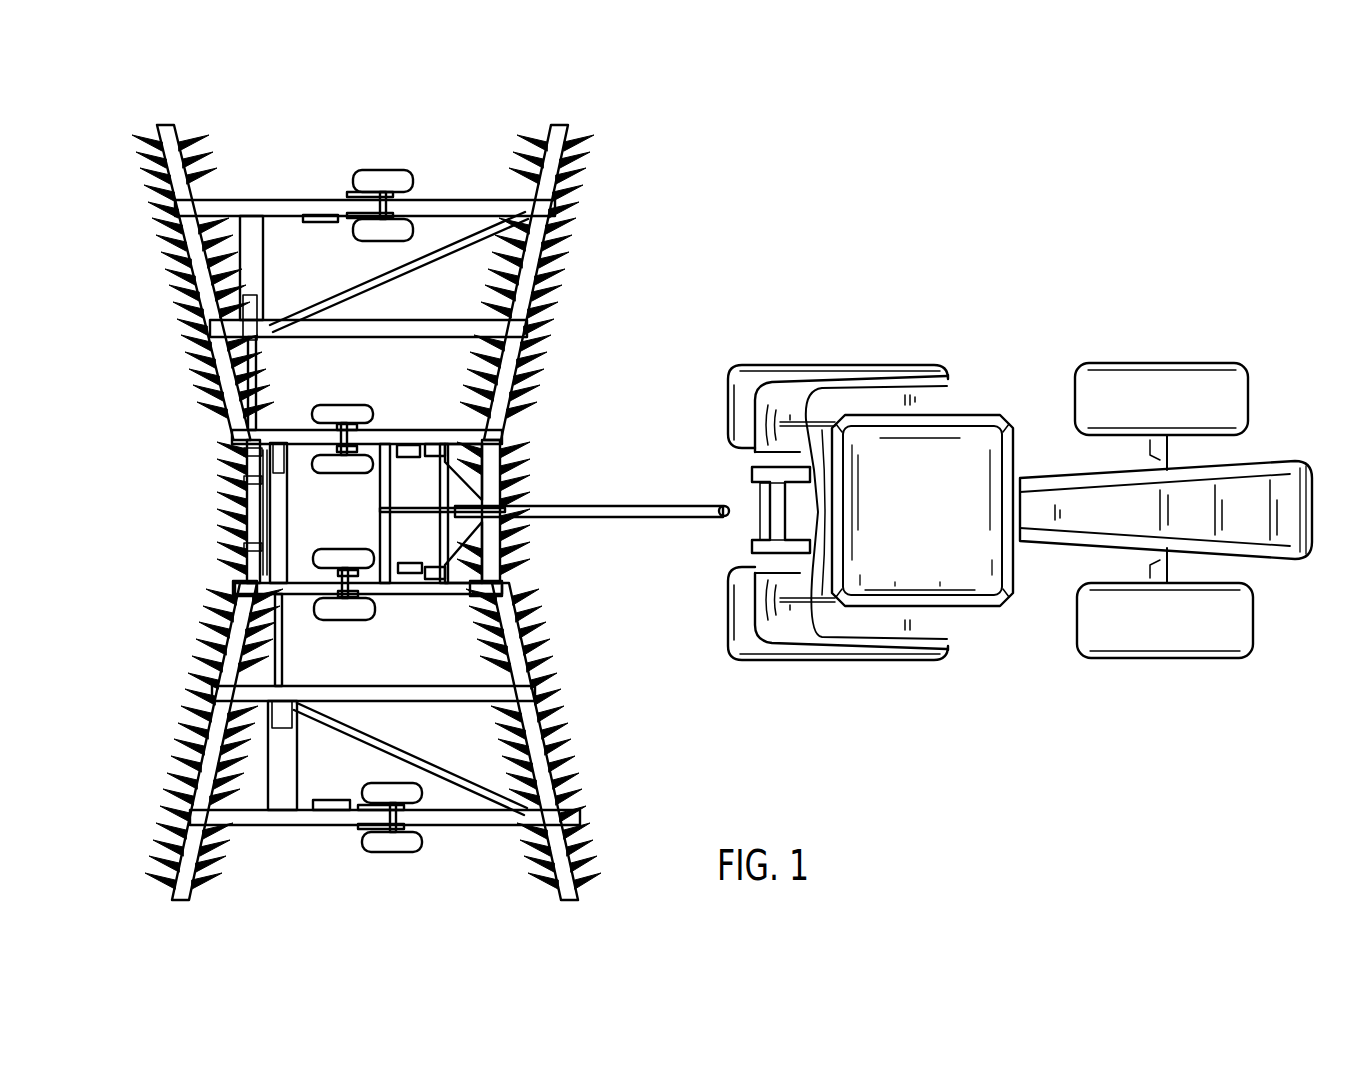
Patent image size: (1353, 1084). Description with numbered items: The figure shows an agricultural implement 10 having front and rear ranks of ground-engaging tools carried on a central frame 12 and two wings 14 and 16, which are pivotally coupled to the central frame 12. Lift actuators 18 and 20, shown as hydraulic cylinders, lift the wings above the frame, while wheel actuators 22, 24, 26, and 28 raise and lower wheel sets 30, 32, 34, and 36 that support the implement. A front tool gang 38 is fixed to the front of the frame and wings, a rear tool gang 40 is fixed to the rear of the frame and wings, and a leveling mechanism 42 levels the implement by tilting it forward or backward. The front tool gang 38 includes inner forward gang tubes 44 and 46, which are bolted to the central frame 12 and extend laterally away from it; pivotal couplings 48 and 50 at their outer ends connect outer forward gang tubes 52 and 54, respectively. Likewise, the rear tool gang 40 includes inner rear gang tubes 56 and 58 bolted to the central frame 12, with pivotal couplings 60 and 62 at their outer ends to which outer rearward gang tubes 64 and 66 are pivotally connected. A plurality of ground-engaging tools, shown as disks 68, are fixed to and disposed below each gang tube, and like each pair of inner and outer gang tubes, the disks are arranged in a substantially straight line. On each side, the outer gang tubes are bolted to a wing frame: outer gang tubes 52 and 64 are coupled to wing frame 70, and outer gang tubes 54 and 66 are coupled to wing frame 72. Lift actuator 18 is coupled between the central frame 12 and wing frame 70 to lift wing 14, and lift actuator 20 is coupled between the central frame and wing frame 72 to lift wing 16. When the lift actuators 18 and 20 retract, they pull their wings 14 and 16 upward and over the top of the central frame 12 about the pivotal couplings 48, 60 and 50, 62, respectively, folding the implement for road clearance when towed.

The implement 10 is at (658, 662).
The central frame 12 is at (592, 532).
The wing 14 is at (668, 205).
The wing 16 is at (594, 741).
The lift actuator 18 is at (244, 512).
The lift actuator 20 is at (289, 528).
The wheel actuator 22 is at (316, 222).
The wheel actuator 24 is at (406, 445).
The wheel actuator 26 is at (408, 563).
The wheel actuator 28 is at (330, 800).
The wheel set 30 is at (383, 168).
The wheel set 32 is at (346, 403).
The wheel set 34 is at (342, 548).
The wheel set 36 is at (388, 855).
The front tool gang 38 is at (560, 322).
The rear tool gang 40 is at (165, 283).
The leveling mechanism 42 is at (486, 497).
The inner forward gang tube 44 is at (484, 447).
The inner forward gang tube 46 is at (485, 570).
The pivotal coupling 48 is at (464, 432).
The pivotal coupling 50 is at (470, 600).
The outer forward gang tube 52 is at (540, 222).
The outer forward gang tube 54 is at (540, 703).
The inner rear gang tube 56 is at (244, 480).
The inner rear gang tube 58 is at (246, 548).
The pivotal coupling 60 is at (244, 452).
The pivotal coupling 62 is at (233, 590).
The outer rearward gang tube 64 is at (160, 200).
The outer rearward gang tube 66 is at (172, 808).
The disks 68 is at (222, 830).
The wing frame 70 is at (432, 272).
The wing frame 72 is at (405, 742).